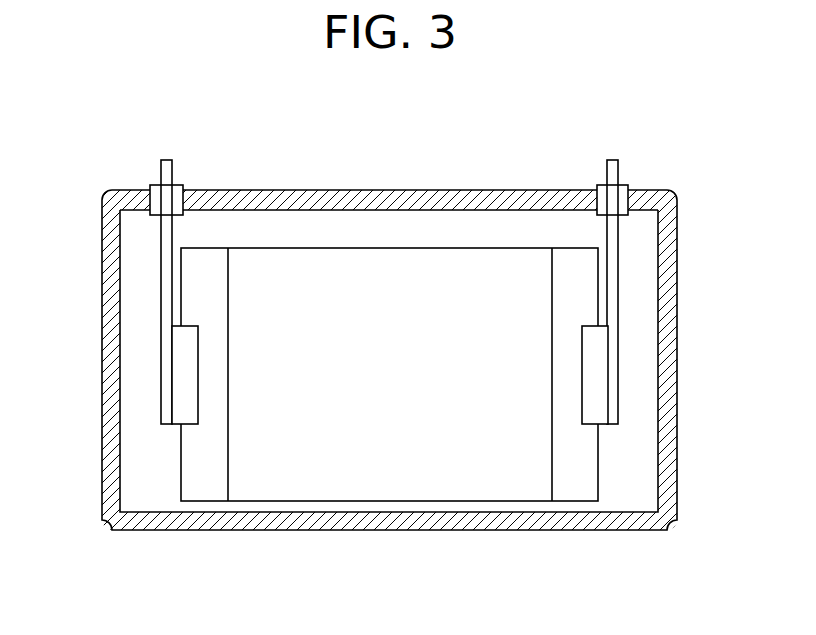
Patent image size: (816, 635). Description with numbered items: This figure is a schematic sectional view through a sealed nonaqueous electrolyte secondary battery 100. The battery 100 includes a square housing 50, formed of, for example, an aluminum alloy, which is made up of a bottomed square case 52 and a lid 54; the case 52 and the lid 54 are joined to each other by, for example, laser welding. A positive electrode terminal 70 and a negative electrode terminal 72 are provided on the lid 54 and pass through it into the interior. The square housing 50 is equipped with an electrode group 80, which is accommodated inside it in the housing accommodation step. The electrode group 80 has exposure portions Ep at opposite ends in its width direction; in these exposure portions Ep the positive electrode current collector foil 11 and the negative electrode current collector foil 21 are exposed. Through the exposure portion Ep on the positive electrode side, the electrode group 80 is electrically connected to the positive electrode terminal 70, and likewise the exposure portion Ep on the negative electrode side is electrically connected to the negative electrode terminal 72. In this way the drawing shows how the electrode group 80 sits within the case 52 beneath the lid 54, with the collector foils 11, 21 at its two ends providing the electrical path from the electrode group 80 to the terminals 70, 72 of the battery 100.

The battery 100 is at (408, 345).
The square housing 50 is at (408, 331).
The bottomed square case 52 is at (677, 328).
The lid 54 is at (443, 190).
The positive electrode terminal 70 is at (167, 165).
The negative electrode terminal 72 is at (611, 165).
The electrode group 80 is at (389, 359).
The positive electrode current collector foil 11 is at (202, 487).
The negative electrode current collector foil 21 is at (574, 487).
The exposure portion Ep is at (199, 306).